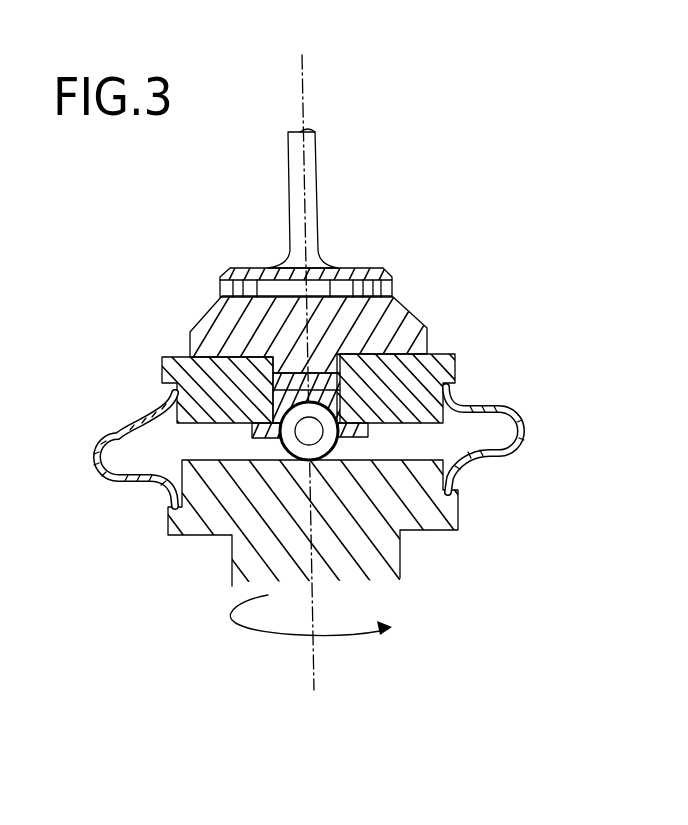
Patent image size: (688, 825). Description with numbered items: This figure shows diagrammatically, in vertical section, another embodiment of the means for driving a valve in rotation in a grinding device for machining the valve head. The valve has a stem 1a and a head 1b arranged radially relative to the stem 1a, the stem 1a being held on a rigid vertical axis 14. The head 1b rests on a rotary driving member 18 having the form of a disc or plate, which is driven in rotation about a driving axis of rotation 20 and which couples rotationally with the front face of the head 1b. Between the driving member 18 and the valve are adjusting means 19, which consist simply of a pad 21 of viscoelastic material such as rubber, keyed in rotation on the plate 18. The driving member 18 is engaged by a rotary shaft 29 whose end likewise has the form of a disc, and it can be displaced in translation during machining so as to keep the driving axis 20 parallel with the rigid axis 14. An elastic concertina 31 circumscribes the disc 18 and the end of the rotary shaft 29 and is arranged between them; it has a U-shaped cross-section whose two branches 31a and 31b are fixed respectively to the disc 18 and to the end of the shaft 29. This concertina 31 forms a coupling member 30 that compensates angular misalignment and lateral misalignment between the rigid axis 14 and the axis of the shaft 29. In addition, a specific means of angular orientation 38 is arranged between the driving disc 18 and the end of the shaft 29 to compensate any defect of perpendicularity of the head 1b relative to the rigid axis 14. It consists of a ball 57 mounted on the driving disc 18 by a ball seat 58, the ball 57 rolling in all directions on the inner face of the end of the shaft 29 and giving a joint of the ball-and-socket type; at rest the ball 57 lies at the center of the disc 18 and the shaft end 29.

The rigid vertical axis 14 is at (303, 93).
The driving axis of rotation 20 is at (300, 130).
The stem 1a is at (317, 178).
The head 1b is at (350, 272).
The adjusting means 19 is at (252, 270).
The pad 21 is at (392, 320).
The rotary driving member 18 is at (195, 380).
The ball seat 58 is at (290, 415).
The means of angular orientation 38 is at (302, 443).
The rotary shaft 29 is at (362, 543).
The coupling member 30 is at (95, 440).
The branch 31a is at (150, 418).
The elastic concertina 31 is at (100, 462).
The branch 31b is at (143, 480).
The ball 57 is at (440, 500).